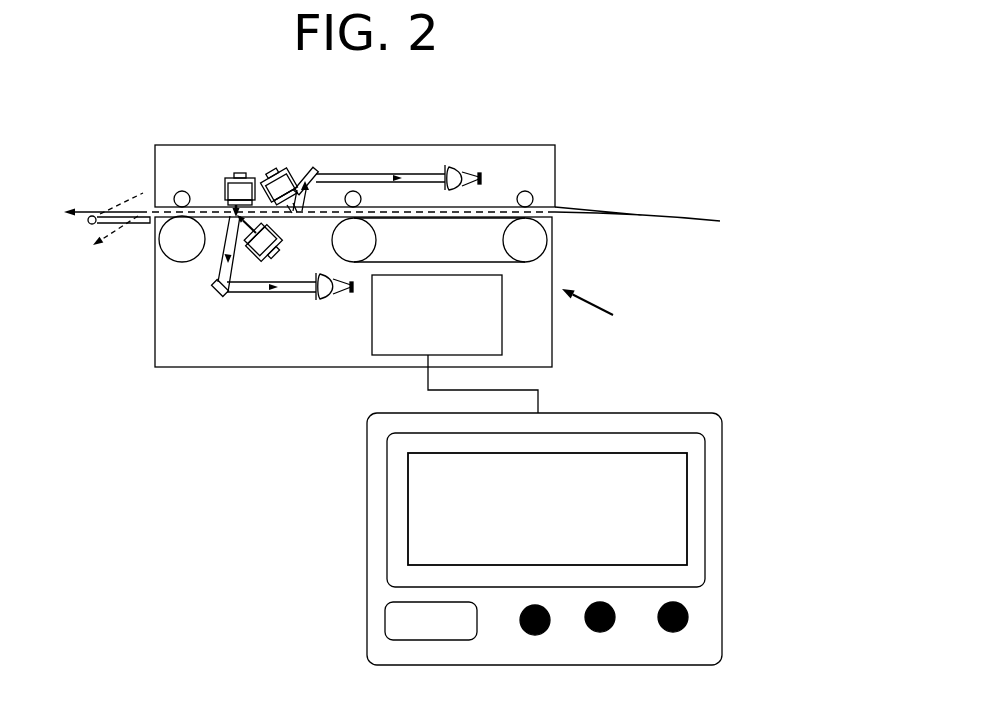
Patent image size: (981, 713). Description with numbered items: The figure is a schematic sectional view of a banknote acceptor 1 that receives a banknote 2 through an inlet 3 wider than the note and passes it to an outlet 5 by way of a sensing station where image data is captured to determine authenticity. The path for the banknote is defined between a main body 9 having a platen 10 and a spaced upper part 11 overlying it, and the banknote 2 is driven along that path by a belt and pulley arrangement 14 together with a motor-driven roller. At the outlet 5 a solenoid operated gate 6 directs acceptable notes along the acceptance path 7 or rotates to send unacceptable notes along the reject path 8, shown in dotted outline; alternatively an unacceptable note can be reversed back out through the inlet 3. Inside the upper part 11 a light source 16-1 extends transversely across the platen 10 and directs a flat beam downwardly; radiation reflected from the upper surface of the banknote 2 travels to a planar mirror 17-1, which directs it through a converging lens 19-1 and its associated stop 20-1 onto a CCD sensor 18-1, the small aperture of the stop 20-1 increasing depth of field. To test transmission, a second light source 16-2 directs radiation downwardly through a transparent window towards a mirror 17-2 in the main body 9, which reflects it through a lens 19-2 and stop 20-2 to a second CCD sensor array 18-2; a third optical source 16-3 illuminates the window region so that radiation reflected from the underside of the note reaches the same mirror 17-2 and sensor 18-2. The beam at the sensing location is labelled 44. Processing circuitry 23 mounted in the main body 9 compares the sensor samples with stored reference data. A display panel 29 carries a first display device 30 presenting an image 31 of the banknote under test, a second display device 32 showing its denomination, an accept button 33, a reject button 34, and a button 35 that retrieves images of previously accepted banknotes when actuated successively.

The banknote acceptor 1 is at (598, 310).
The banknote 2 is at (627, 205).
The inlet 3 is at (558, 209).
The outlet 5 is at (155, 206).
The solenoid operated gate 6 is at (88, 223).
The acceptance path 7 is at (97, 212).
The reject path 8 is at (106, 245).
The main body 9 is at (553, 332).
The platen 10 is at (298, 213).
The upper part 11 is at (320, 145).
The belt and pulley arrangement 14 is at (502, 265).
The light source 16-1 is at (270, 169).
The second light source 16-2 is at (240, 173).
The third optical source 16-3 is at (262, 262).
The planar mirror 17-1 is at (308, 167).
The mirror 17-2 is at (216, 297).
The sensor 18-1 is at (480, 172).
The second CCD sensor array 18-2 is at (353, 292).
The converging lens 19-1 is at (460, 166).
The lens 19-2 is at (335, 299).
The stop 20-1 is at (444, 166).
The stop 20-2 is at (317, 299).
The processing circuitry 23 is at (437, 315).
The display panel 29 is at (722, 520).
The first display device 30 is at (706, 480).
The image 31 is at (656, 433).
The second display device 32 is at (385, 623).
The accept button 33 is at (524, 630).
The reject button 34 is at (611, 604).
The button 35 is at (686, 625).
The sensing beam 44 is at (236, 216).